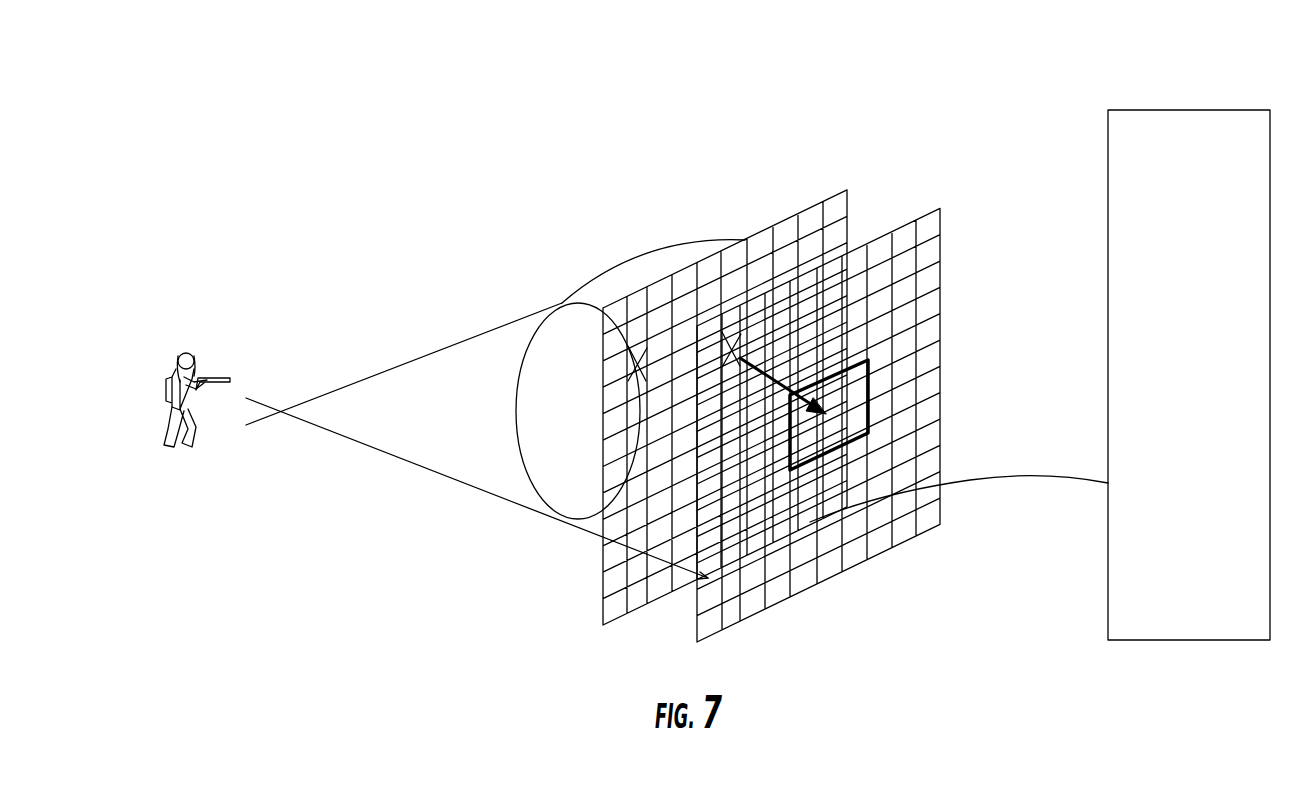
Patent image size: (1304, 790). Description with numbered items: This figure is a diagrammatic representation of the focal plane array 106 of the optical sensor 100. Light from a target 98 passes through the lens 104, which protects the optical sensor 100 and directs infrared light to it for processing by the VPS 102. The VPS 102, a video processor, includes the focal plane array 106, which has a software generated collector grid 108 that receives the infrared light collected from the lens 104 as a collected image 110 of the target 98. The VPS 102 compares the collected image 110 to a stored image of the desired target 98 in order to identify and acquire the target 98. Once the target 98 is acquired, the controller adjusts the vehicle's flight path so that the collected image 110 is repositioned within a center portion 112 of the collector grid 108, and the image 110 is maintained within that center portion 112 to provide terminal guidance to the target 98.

The target 98 is at (192, 346).
The optical sensor 100 is at (590, 277).
The VPS 102 is at (1155, 110).
The lens 104 is at (548, 475).
The focal plane array 106 is at (888, 204).
The collector grid 108 is at (700, 640).
The collected image 110 is at (832, 428).
The center portion 112 is at (868, 372).